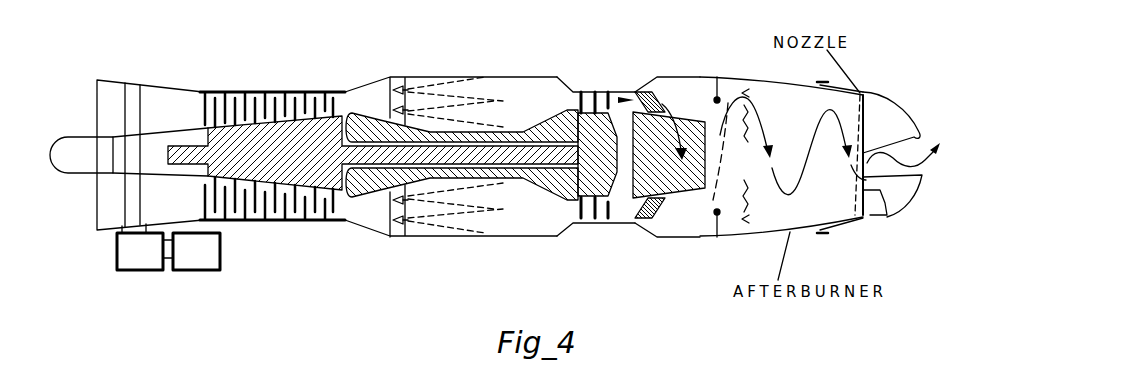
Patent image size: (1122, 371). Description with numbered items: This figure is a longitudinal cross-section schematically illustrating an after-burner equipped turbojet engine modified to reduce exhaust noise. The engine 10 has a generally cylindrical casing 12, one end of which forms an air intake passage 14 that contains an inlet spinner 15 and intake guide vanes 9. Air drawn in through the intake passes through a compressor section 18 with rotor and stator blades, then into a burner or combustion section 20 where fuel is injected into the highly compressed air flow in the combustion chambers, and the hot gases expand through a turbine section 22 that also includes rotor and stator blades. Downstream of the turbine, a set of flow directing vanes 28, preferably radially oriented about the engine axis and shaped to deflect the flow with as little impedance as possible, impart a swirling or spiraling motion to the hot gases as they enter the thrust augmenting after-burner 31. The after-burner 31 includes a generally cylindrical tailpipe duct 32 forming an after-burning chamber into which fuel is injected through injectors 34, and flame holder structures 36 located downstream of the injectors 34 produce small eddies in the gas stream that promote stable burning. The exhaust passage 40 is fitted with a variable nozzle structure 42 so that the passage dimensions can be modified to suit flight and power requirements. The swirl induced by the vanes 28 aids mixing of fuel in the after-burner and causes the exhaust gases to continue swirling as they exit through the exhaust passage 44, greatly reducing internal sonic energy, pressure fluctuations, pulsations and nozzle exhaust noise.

The intake guide vanes 9 is at (125, 95).
The engine 10 is at (369, 237).
The casing 12 is at (353, 90).
The air intake passage 14 is at (108, 208).
The inlet spinner 15 is at (78, 160).
The compressor section 18 is at (258, 87).
The combustion section 20 is at (456, 88).
The turbine section 22 is at (603, 91).
The flow directing vanes 28 is at (637, 219).
The after-burner 31 is at (731, 242).
The tailpipe duct 32 is at (777, 77).
The injectors 34 is at (717, 97).
The flame holder structures 36 is at (793, 156).
The exhaust passage 40 is at (882, 212).
The variable nozzle structure 42 is at (890, 114).
The exhaust passage 44 is at (920, 137).